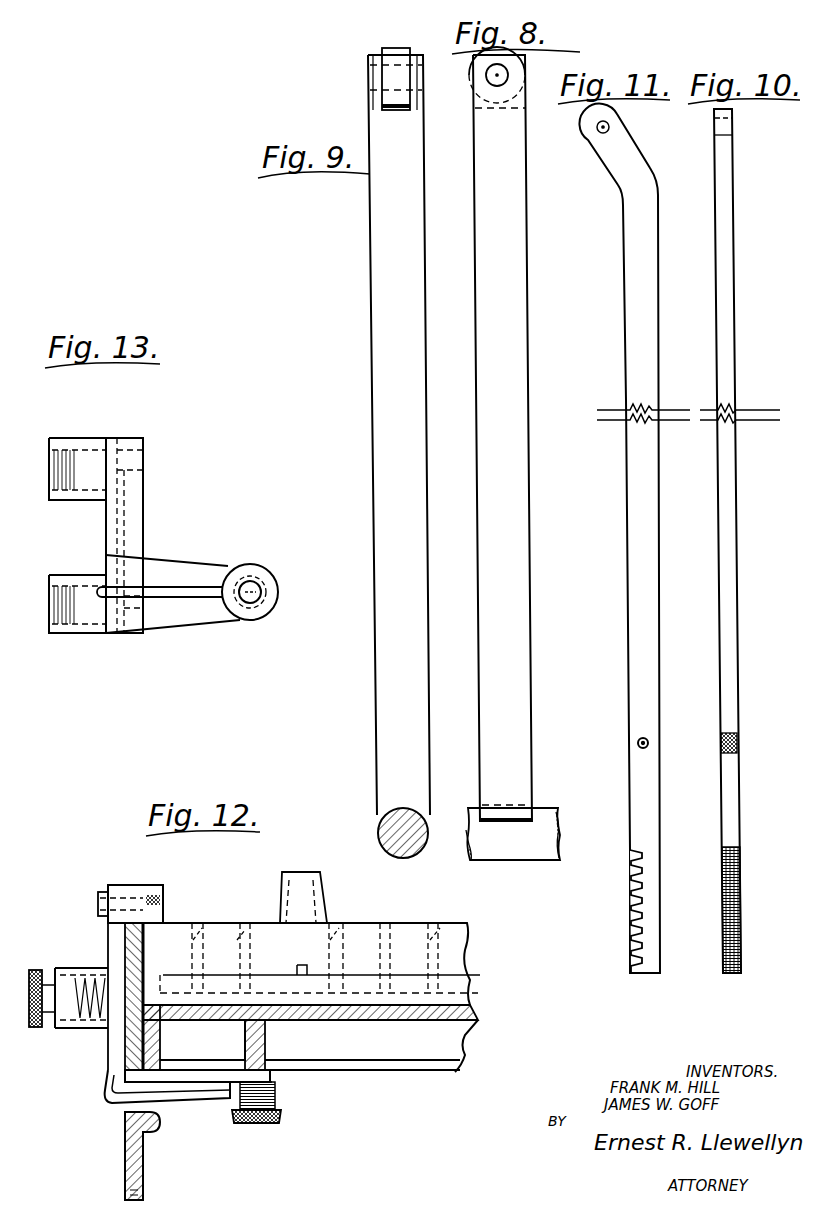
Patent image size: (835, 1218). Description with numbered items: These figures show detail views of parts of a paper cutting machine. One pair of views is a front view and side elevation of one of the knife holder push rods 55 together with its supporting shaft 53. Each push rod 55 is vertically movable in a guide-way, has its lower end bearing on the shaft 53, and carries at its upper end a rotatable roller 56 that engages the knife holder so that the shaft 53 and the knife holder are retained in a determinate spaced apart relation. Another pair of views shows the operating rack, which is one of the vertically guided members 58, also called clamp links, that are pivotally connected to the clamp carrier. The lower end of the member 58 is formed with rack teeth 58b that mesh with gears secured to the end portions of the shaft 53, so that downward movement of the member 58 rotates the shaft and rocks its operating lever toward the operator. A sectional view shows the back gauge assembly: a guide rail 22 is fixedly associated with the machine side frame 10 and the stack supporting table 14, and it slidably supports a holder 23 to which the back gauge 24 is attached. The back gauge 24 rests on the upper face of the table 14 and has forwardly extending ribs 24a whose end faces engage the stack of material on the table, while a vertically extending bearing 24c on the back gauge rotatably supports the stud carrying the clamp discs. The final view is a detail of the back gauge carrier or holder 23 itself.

In FIG. 12, the side frame 10 is at (125, 1170).
In FIG. 12, the table 14 is at (408, 1073).
In FIG. 12, the guide rail 22 is at (125, 1050).
In FIG. 13, the holder 23 is at (104, 518).
In FIG. 12, the holder 23 is at (118, 885).
In FIG. 12, the back gauge 24 is at (358, 924).
In FIG. 12, the ribs 24a is at (200, 938).
In FIG. 12, the bearing 24c is at (325, 895).
In FIG. 9, the shaft 53 is at (392, 838).
In FIG. 8, the shaft 53 is at (558, 855).
In FIG. 9, the push rod 55 is at (426, 367).
In FIG. 8, the push rod 55 is at (459, 383).
In FIG. 9, the roller 56 is at (395, 50).
In FIG. 8, the roller 56 is at (517, 58).
In FIG. 11, the vertically guided member 58 is at (658, 522).
In FIG. 10, the vertically guided member 58 is at (696, 540).
In FIG. 11, the rack teeth 58b is at (632, 922).